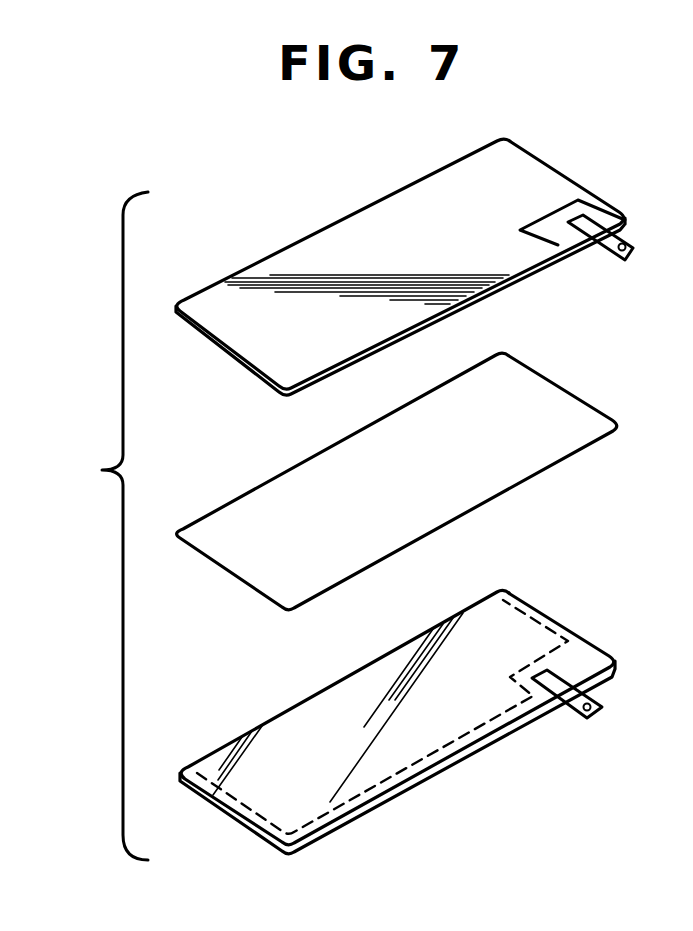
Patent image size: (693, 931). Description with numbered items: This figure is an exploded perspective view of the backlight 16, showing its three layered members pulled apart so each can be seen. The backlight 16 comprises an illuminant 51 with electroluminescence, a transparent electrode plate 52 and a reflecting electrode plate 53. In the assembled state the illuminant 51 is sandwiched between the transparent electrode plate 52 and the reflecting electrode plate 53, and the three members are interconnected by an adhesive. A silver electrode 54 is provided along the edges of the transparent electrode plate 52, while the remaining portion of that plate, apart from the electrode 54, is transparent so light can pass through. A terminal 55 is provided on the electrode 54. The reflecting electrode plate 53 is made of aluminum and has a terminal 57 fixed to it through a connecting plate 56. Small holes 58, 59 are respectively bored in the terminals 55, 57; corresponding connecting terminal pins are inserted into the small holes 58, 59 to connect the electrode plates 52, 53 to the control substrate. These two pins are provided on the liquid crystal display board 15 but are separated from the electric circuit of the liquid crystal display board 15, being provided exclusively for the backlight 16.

The liquid crystal display board 15 is at (556, 166).
The backlight 16 is at (102, 526).
The illuminant 51 is at (567, 413).
The transparent electrode plate 52 is at (338, 783).
The reflecting electrode plate 53 is at (304, 258).
The silver electrode 54 is at (443, 752).
The terminal 55 is at (571, 700).
The connecting plate 56 is at (548, 232).
The terminal 57 is at (606, 248).
The small hole 58 is at (600, 699).
The small hole 59 is at (629, 251).